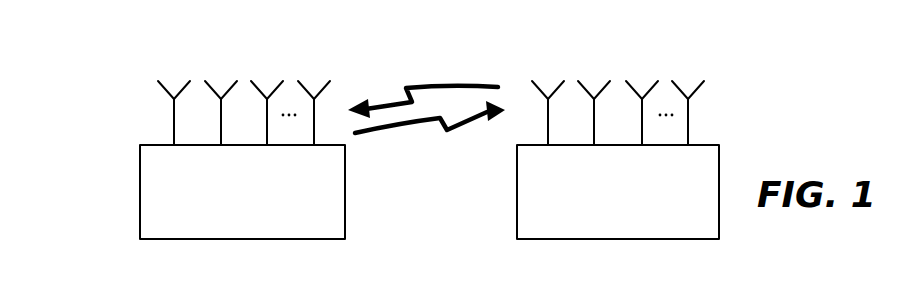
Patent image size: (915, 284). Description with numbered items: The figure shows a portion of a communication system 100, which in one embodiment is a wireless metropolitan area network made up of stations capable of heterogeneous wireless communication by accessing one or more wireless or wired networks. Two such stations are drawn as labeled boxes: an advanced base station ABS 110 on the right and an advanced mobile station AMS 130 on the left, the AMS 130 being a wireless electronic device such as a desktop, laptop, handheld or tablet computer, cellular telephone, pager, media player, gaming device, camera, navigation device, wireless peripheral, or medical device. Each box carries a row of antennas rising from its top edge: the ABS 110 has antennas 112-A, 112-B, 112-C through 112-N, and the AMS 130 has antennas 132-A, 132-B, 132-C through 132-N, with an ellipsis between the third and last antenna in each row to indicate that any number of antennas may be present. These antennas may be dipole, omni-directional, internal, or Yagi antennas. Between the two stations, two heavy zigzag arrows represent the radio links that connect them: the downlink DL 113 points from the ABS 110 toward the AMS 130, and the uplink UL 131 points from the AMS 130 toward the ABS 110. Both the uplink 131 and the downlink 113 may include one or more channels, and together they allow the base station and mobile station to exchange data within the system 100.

The communication system 100 is at (92, 118).
The advanced mobile station 130 is at (285, 204).
The advanced base station 110 is at (659, 204).
The antenna 132-A is at (163, 84).
The antenna 132-B is at (211, 84).
The antenna 132-C is at (257, 84).
The antenna 132-N is at (325, 84).
The antenna 112-A is at (537, 84).
The antenna 112-B is at (584, 84).
The antenna 112-C is at (632, 84).
The antenna 112-N is at (699, 84).
The downlink 113 is at (405, 87).
The uplink 131 is at (436, 124).